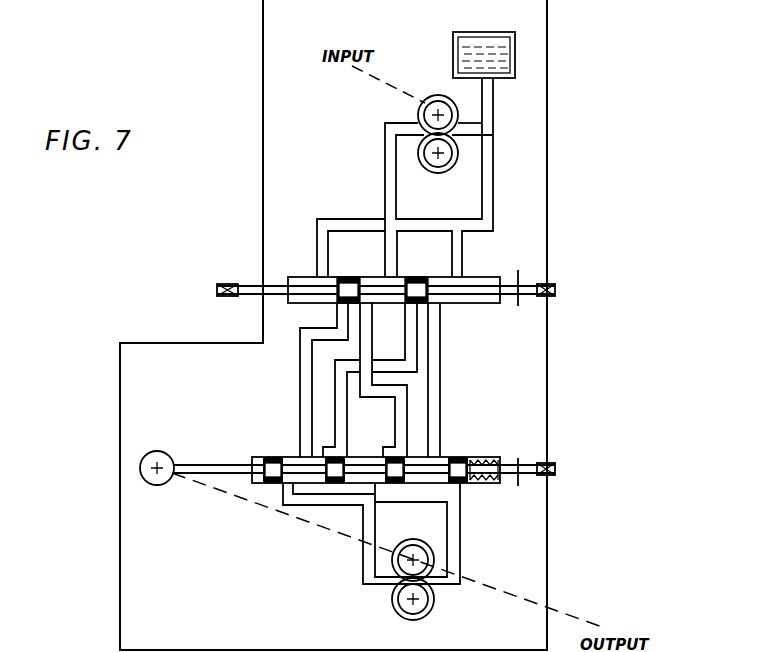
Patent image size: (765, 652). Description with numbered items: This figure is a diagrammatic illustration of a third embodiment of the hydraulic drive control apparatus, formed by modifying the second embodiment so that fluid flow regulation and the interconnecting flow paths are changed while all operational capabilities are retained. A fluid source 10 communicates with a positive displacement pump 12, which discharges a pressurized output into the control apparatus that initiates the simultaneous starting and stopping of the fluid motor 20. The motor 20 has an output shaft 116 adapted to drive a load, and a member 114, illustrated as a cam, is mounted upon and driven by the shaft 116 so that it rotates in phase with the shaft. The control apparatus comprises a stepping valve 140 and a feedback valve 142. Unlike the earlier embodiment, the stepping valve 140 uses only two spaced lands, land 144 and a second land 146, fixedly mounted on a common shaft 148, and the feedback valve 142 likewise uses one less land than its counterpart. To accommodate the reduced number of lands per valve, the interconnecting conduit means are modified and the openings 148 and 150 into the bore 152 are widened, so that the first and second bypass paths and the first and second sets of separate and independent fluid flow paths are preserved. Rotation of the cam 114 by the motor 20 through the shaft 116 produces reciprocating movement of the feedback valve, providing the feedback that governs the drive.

The fluid source 10 is at (515, 51).
The positive displacement pump 12 is at (440, 95).
The fluid motor 20 is at (437, 530).
The member 114 is at (141, 453).
The output shaft 116 is at (302, 522).
The stepping valve 140 is at (476, 272).
The feedback valve 142 is at (487, 453).
The land 144 is at (338, 276).
The valve spool 146 is at (403, 275).
The common shaft 148 is at (474, 303).
The opening 150 is at (410, 451).
The bore 152 is at (493, 485).